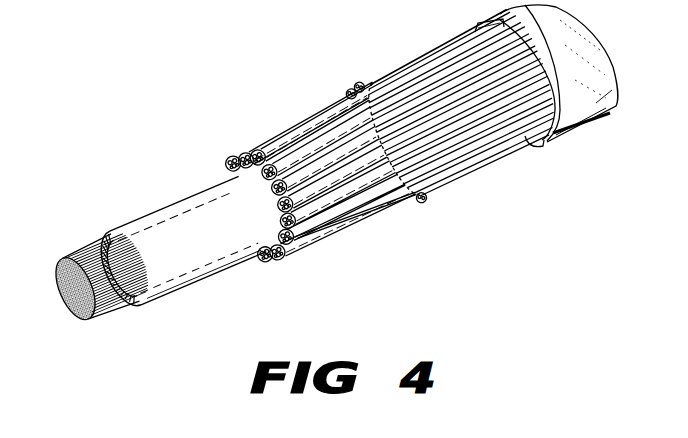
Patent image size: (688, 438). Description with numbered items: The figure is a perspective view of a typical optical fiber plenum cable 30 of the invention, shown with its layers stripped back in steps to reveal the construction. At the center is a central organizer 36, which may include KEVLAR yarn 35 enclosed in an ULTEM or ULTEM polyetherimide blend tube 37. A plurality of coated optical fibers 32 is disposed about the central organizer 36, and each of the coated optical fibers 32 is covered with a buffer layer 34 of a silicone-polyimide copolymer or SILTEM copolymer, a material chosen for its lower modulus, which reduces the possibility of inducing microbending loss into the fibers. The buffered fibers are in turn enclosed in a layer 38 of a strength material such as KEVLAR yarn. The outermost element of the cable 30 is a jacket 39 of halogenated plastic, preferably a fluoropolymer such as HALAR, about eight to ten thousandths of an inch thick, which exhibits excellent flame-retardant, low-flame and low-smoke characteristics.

The optical fiber plenum cable 30 is at (174, 100).
The coated optical fibers 32 is at (286, 268).
The buffer layer 34 is at (336, 226).
The KEVLAR yarn 35 is at (75, 309).
The central organizer 36 is at (150, 206).
The polyetherimide tube 37 is at (137, 310).
The layer of strength material 38 is at (417, 63).
The jacket 39 is at (542, 141).